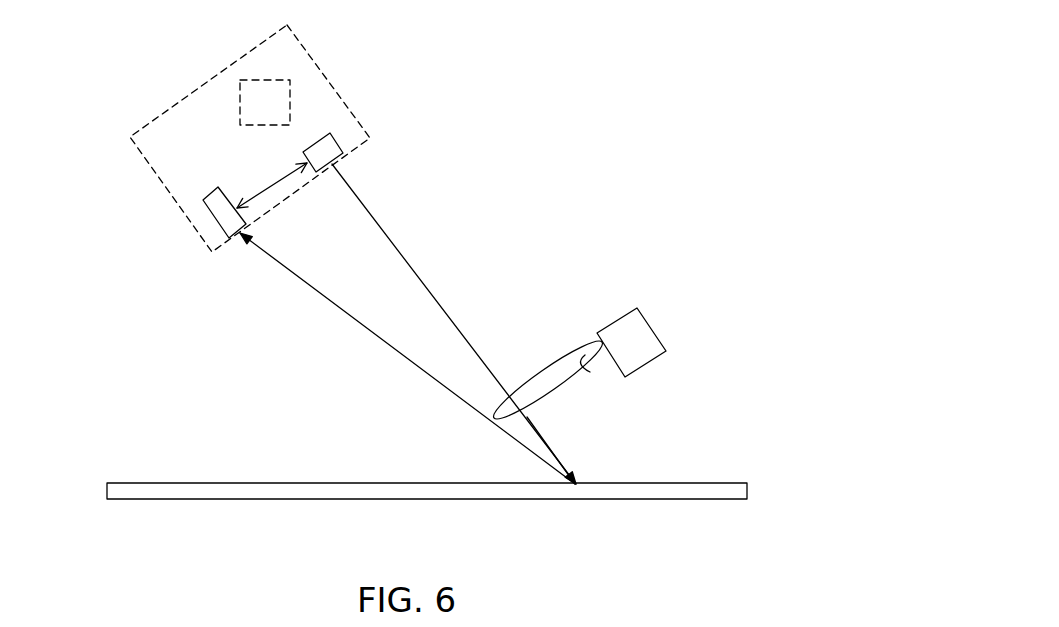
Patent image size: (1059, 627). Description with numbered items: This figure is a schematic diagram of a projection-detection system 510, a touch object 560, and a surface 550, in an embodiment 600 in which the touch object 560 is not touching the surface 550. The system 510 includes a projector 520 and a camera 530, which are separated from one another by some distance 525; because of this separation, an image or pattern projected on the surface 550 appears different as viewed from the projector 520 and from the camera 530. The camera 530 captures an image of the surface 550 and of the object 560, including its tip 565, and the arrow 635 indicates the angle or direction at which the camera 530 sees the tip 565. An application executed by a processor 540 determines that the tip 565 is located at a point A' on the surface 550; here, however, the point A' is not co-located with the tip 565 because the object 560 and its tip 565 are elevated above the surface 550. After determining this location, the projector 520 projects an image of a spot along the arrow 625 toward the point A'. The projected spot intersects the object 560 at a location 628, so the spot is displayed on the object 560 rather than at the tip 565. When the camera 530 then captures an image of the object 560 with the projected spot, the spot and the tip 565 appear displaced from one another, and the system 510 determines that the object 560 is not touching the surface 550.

The projection-detection system 510 is at (153, 173).
The projector 520 is at (338, 146).
The distance 525 is at (279, 170).
The camera 530 is at (212, 219).
The processor 540 is at (240, 88).
The surface 550 is at (438, 448).
The touch object 560 is at (591, 345).
The tip 565 is at (486, 408).
The inspection system 600 is at (644, 177).
The arrow 625 is at (454, 324).
The location 628 is at (513, 383).
The arrow 635 is at (407, 358).
The point A' is at (617, 519).